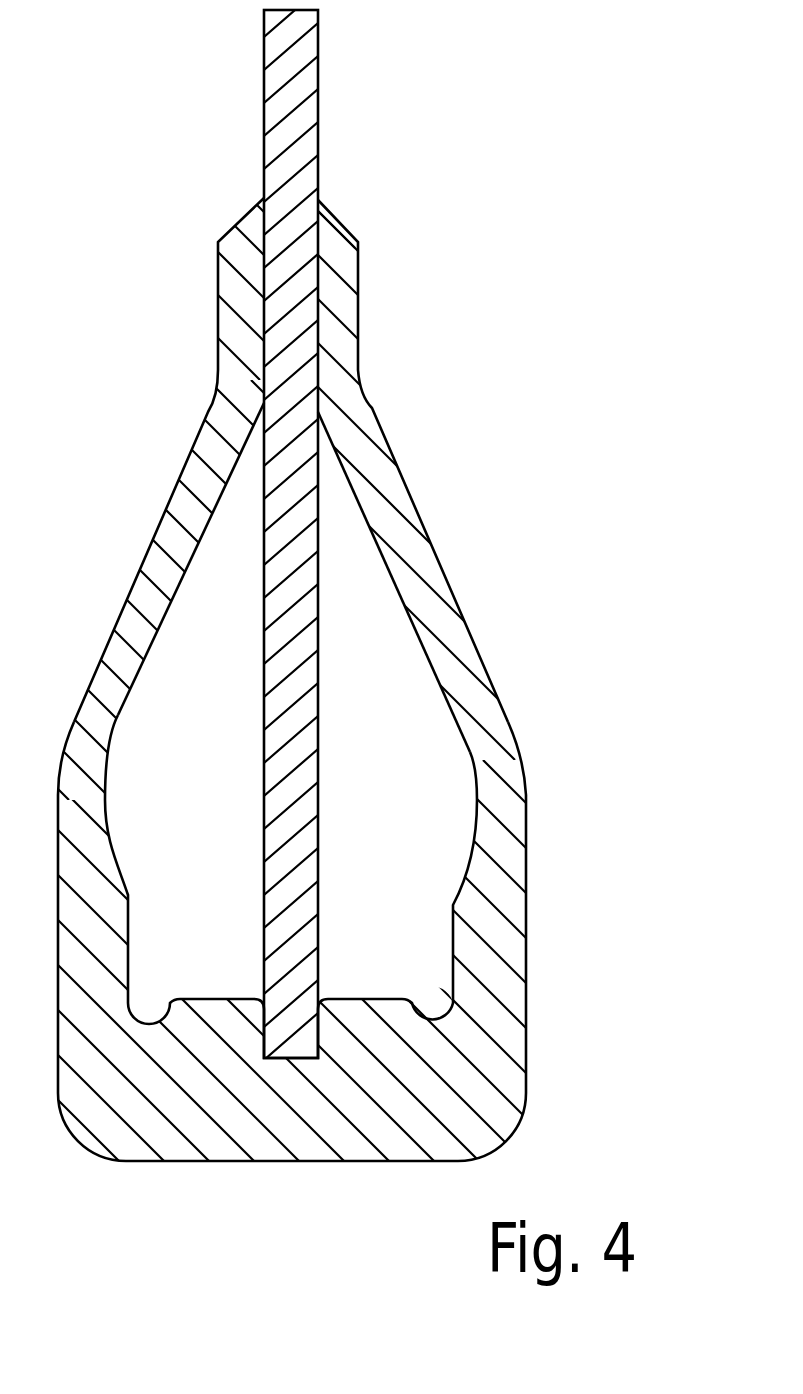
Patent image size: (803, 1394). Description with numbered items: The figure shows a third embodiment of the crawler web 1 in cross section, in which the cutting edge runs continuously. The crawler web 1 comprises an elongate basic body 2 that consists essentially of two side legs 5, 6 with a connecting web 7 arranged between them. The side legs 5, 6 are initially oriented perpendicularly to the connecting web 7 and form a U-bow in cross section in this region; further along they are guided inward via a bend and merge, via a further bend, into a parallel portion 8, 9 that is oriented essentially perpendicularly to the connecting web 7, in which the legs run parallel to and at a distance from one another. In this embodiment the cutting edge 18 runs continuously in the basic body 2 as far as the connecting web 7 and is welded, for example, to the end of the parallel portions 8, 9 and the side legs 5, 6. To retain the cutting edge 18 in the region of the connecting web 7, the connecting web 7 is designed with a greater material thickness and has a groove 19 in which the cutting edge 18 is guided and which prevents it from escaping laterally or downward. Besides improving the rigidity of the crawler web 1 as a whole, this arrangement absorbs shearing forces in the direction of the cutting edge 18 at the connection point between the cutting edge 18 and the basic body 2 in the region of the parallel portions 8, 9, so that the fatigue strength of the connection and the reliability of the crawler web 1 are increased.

The crawler web 1 is at (578, 465).
The basic body 2 is at (592, 766).
The side leg 5 is at (455, 627).
The side leg 6 is at (130, 628).
The connecting web 7 is at (373, 1133).
The parallel portion 8 is at (347, 320).
The parallel portion 9 is at (232, 322).
The cutting edge 18 is at (303, 113).
The groove 19 is at (320, 1035).